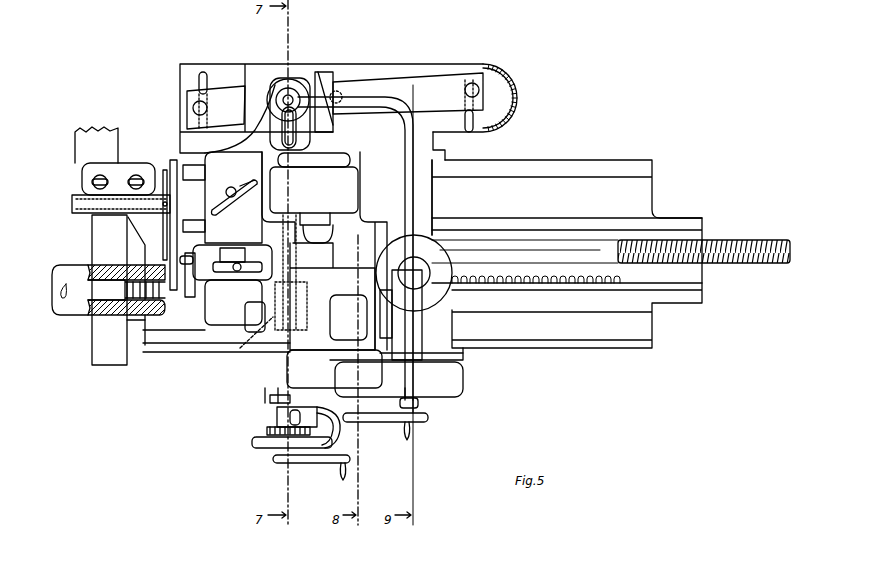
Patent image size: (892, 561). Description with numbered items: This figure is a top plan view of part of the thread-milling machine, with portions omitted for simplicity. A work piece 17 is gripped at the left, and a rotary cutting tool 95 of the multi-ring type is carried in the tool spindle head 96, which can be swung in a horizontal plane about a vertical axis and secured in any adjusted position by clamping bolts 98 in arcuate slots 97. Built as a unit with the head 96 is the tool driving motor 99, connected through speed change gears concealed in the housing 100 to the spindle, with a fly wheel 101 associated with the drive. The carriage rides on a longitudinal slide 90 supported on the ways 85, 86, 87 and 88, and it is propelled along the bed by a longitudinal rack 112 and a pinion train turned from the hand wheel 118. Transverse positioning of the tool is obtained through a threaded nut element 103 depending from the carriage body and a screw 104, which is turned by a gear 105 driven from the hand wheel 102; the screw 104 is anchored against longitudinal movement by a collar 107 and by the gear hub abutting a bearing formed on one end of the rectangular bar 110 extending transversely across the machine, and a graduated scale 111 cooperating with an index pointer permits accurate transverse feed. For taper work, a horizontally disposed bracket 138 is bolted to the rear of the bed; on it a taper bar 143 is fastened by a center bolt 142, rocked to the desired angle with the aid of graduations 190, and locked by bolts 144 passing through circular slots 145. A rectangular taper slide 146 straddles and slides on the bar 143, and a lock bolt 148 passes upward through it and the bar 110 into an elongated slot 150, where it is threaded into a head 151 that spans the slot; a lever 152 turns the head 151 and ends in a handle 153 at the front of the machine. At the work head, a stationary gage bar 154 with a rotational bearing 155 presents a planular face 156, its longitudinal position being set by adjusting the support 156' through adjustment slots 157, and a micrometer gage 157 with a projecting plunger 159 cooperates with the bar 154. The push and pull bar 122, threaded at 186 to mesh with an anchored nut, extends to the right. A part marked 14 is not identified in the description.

The bracket 138 is at (395, 68).
The graduations 190 is at (494, 80).
The taper bar 143 is at (440, 80).
The bolts 144 is at (478, 84).
The circular slots 145 is at (478, 118).
The taper slide 146 is at (325, 74).
The lock bolt 148 is at (280, 84).
The head 151 is at (296, 78).
The elongated slot 150 is at (284, 125).
The center bolt 142 is at (345, 90).
The lever 152 is at (378, 102).
The way 88 is at (578, 166).
The longitudinal slide 90 is at (433, 193).
The way 87 is at (568, 232).
The push and pull bar 122 is at (535, 238).
The thread 186 is at (738, 243).
The longitudinal rack 112 is at (535, 282).
The way 85 is at (525, 344).
The way 86 is at (572, 345).
The fly wheel 101 is at (462, 352).
The tool driving motor 99 is at (324, 251).
The housing 100 is at (328, 301).
The tool spindle head 96 is at (222, 197).
The clamping bolt 98 is at (234, 189).
The arcuate slot 97 is at (252, 184).
The support 156' is at (116, 145).
The micrometer gage 157 is at (248, 282).
The rotational bearing 155 is at (80, 214).
The gage bar 154 is at (178, 205).
The planular face 156 is at (172, 233).
The plunger 159 is at (191, 256).
The tool 95 is at (175, 332).
The work piece 17 is at (148, 346).
The shaft with spring 14 is at (205, 332).
The threaded nut element 103 is at (240, 348).
The rectangular bar 110 is at (265, 392).
The screw 104 is at (270, 393).
The collar 107 is at (282, 420).
The gear 105 is at (268, 428).
The graduated scale 111 is at (254, 440).
The hand wheel 102 is at (272, 458).
The handle 153 is at (418, 404).
The hand wheel 118 is at (385, 423).